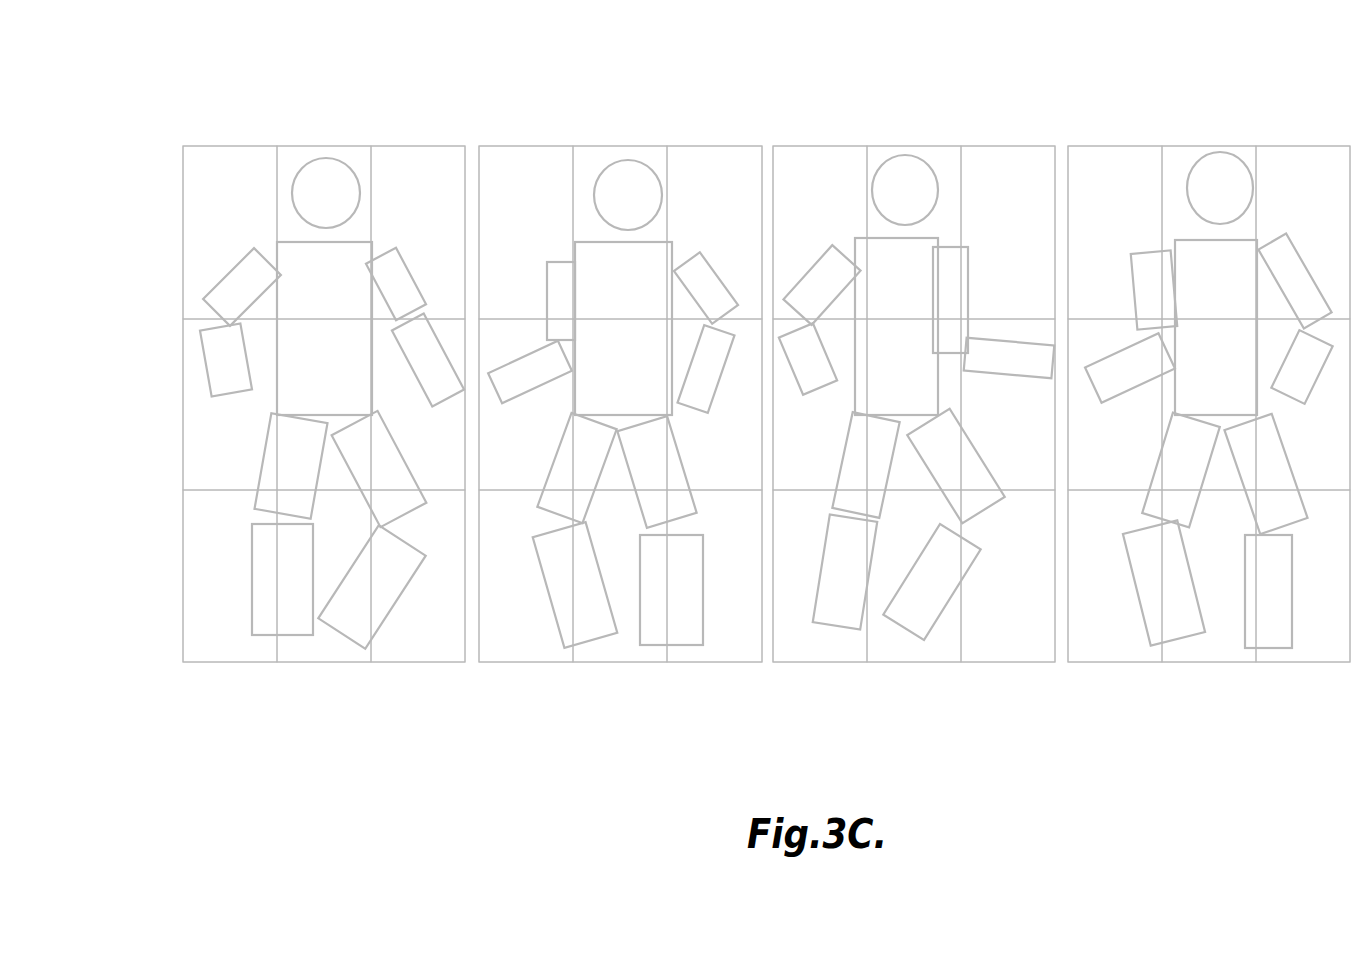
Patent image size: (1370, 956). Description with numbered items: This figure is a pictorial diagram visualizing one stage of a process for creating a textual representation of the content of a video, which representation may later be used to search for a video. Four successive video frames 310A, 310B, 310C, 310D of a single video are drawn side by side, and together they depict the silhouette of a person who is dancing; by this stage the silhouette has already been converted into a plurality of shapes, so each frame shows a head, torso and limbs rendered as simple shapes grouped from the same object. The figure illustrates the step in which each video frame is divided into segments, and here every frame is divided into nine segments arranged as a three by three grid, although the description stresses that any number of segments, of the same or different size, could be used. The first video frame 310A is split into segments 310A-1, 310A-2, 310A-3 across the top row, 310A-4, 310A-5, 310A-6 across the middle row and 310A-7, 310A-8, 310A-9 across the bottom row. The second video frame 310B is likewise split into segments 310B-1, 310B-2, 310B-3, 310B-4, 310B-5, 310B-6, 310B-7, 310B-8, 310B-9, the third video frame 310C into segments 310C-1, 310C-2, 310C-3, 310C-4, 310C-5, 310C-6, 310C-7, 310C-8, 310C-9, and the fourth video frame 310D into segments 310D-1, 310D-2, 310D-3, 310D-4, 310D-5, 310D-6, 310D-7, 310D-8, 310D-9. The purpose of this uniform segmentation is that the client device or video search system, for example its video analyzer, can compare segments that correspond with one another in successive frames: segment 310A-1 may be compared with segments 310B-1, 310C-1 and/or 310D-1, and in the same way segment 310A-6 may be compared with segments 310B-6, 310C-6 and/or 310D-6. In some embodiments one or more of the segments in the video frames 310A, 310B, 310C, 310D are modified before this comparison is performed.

The video frame 310A is at (320, 109).
The video frame 310B is at (613, 109).
The video frame 310C is at (883, 109).
The video frame 310D is at (1205, 109).
The segment 310A-1 is at (194, 242).
The segment 310A-2 is at (288, 242).
The segment 310A-3 is at (382, 242).
The segment 310A-4 is at (194, 414).
The segment 310A-5 is at (288, 414).
The segment 310A-6 is at (382, 414).
The segment 310A-7 is at (194, 586).
The segment 310A-8 is at (288, 586).
The segment 310A-9 is at (382, 586).
The segment 310B-1 is at (490, 242).
The segment 310B-2 is at (584, 242).
The segment 310B-3 is at (678, 242).
The segment 310B-4 is at (490, 414).
The segment 310B-5 is at (584, 414).
The segment 310B-6 is at (678, 414).
The segment 310B-7 is at (490, 586).
The segment 310B-8 is at (584, 586).
The segment 310B-9 is at (678, 586).
The segment 310C-1 is at (784, 242).
The segment 310C-2 is at (878, 242).
The segment 310C-3 is at (972, 242).
The segment 310C-4 is at (784, 414).
The segment 310C-5 is at (878, 414).
The segment 310C-6 is at (972, 414).
The segment 310C-7 is at (784, 586).
The segment 310C-8 is at (878, 586).
The segment 310C-9 is at (972, 586).
The segment 310D-1 is at (1079, 242).
The segment 310D-2 is at (1173, 242).
The segment 310D-3 is at (1267, 242).
The segment 310D-4 is at (1079, 414).
The segment 310D-5 is at (1173, 414).
The segment 310D-6 is at (1267, 414).
The segment 310D-7 is at (1079, 586).
The segment 310D-8 is at (1173, 586).
The segment 310D-9 is at (1267, 586).